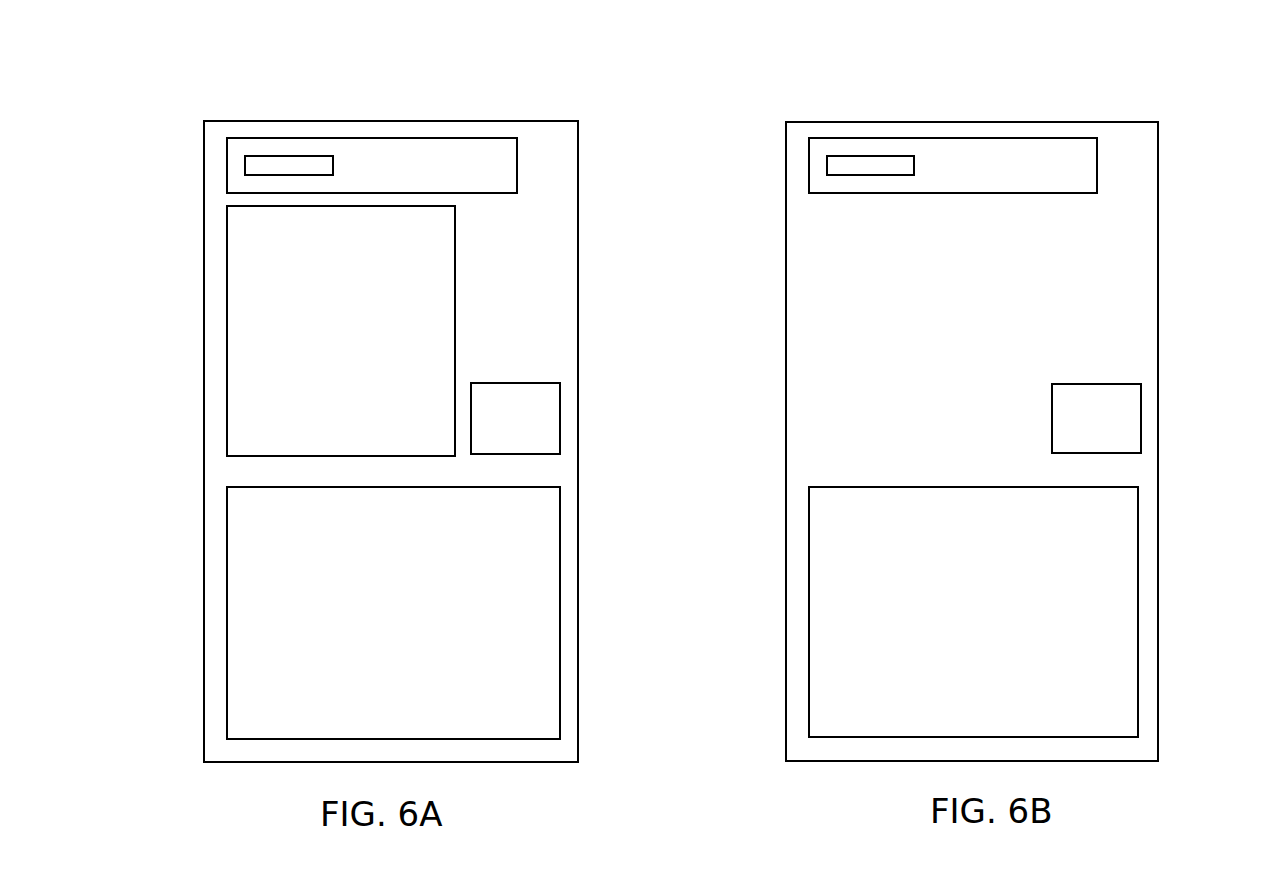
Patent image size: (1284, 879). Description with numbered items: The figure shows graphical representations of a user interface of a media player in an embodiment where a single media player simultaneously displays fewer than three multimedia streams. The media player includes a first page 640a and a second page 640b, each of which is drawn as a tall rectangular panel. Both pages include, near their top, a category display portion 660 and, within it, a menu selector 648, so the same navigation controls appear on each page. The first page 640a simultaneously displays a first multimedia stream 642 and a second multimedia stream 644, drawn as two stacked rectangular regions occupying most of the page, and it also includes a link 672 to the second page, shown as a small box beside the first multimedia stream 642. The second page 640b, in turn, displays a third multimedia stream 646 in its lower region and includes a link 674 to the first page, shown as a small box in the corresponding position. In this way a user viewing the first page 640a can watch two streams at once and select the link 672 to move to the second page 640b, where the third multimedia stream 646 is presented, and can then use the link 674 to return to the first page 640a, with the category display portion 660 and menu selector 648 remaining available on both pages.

In FIG. 6A, the first page 640a is at (488, 112).
In FIG. 6A, the category display portion 660 is at (282, 127).
In FIG. 6B, the category display portion 660 is at (863, 127).
In FIG. 6A, the menu selector 648 is at (235, 161).
In FIG. 6B, the menu selector 648 is at (817, 161).
In FIG. 6A, the first multimedia stream 642 is at (217, 318).
In FIG. 6A, the link to the second page 672 is at (570, 419).
In FIG. 6A, the second multimedia stream 644 is at (217, 621).
In FIG. 6B, the second page 640b is at (1055, 112).
In FIG. 6B, the link to the first page 674 is at (1151, 419).
In FIG. 6B, the third multimedia stream 646 is at (799, 621).